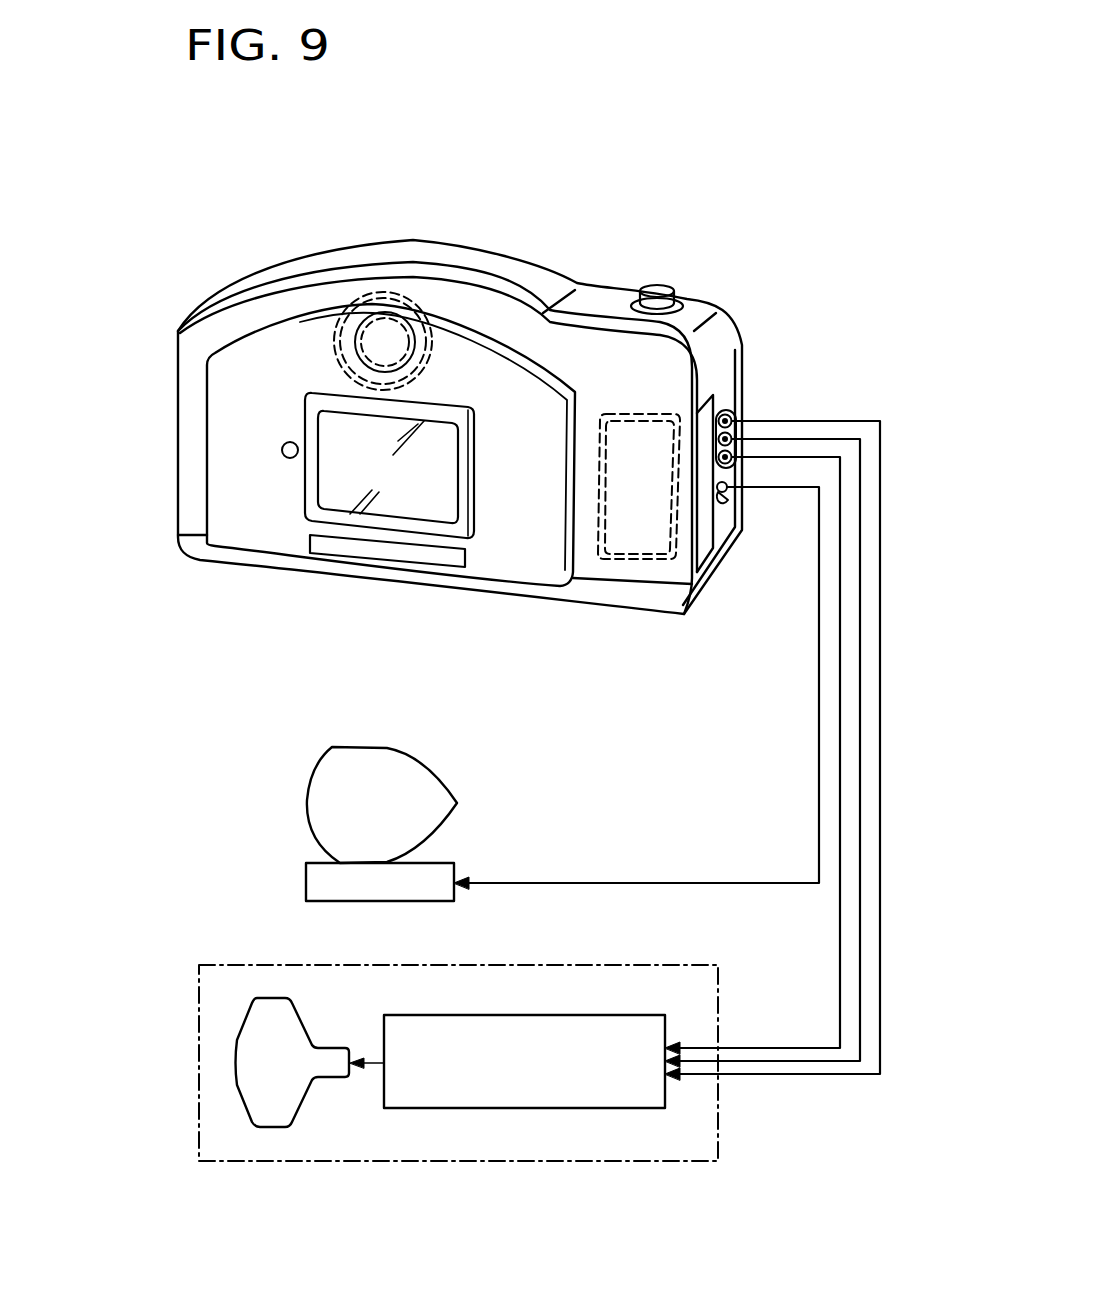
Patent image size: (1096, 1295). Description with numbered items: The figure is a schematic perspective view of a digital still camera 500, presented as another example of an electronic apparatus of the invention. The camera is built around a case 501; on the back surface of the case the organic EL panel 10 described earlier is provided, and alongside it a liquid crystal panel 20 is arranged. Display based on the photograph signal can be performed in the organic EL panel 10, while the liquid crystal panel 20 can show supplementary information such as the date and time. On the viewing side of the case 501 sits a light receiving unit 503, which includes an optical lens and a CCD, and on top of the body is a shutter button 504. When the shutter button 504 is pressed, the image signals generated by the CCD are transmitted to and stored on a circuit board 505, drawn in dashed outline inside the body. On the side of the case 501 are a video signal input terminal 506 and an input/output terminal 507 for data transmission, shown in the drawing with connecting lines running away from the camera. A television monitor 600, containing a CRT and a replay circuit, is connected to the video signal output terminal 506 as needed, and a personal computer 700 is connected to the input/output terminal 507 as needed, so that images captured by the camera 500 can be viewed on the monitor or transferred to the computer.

The digital still camera 500 is at (535, 197).
The case 501 is at (193, 388).
The light receiving unit 503 is at (404, 300).
The shutter button 504 is at (655, 285).
The circuit board 505 is at (633, 536).
The video signal input terminal 506 is at (736, 397).
The input/output terminal for data transmission 507 is at (735, 513).
The organic EL panel 10 is at (422, 500).
The liquid crystal panel 20 is at (340, 548).
The personal computer 700 is at (314, 770).
The television monitor 600 is at (198, 1014).